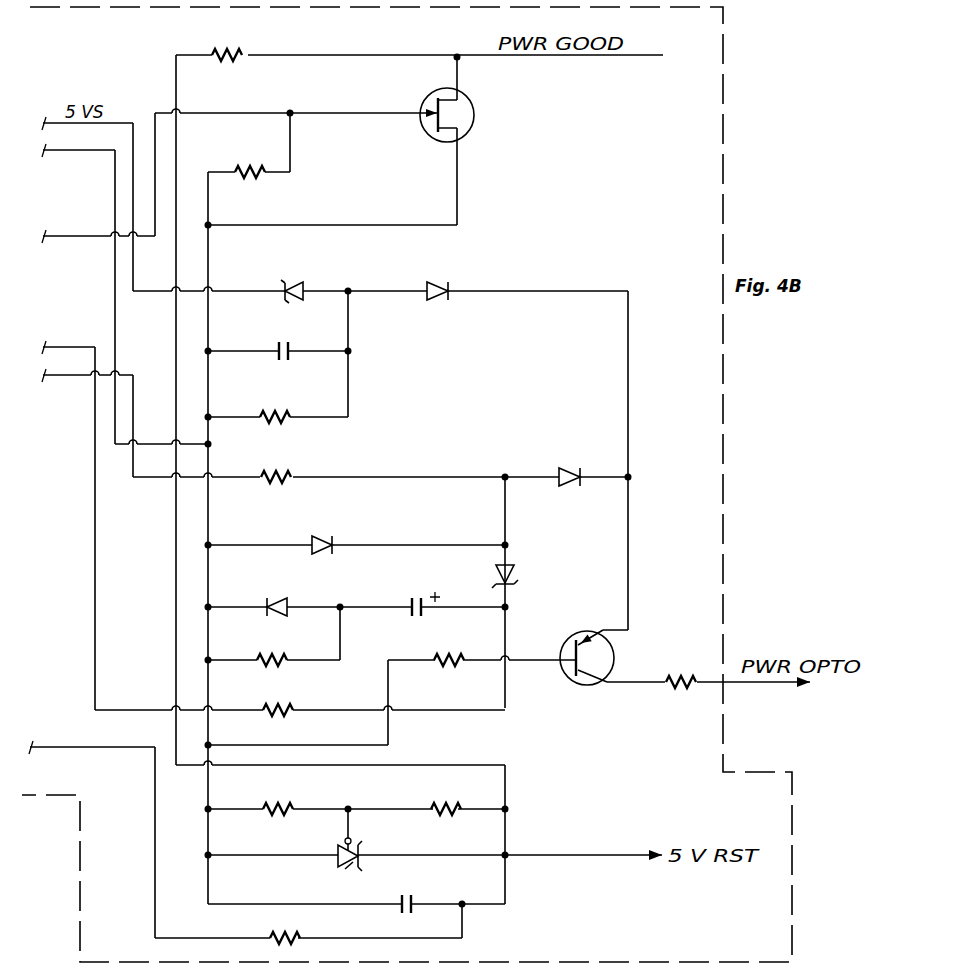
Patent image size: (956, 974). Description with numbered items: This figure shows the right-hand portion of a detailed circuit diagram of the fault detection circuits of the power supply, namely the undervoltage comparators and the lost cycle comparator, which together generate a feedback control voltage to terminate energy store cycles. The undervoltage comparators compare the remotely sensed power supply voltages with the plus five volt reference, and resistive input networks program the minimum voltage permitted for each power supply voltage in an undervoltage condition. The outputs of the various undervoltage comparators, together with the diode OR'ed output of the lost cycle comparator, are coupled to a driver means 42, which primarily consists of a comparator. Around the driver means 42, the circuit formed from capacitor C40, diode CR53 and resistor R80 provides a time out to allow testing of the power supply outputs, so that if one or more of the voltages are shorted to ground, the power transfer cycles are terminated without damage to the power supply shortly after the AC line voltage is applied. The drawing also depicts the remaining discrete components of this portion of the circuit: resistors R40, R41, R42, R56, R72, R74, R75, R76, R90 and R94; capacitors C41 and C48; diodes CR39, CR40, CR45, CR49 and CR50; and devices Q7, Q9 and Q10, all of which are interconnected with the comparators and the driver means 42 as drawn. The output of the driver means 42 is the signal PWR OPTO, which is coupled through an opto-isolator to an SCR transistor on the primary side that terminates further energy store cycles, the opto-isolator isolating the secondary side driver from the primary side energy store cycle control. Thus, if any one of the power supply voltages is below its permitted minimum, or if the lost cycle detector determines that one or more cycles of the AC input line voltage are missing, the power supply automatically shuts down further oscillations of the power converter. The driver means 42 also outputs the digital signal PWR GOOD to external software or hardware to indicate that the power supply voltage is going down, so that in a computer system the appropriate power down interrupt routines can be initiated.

The driver means 42 is at (724, 167).
The resistor 2.2K R56 is at (235, 36).
The resistor 10K R76 is at (244, 150).
The transistor Q10 is at (461, 117).
The zener diode CR45 is at (306, 279).
The diode CR49 is at (469, 282).
The capacitor .22 C41 is at (285, 338).
The resistor 68 R94 is at (267, 404).
The resistor 1.6K R74 is at (279, 463).
The diode CR50 is at (578, 463).
The diode CR39 is at (338, 532).
The diode CR53 is at (278, 594).
The capacitor C40 is at (425, 591).
The zener diode CR40 is at (536, 576).
The resistor R80 is at (270, 658).
The resistor 68 R72 is at (451, 659).
The resistor 1.6K R75 is at (299, 712).
The transistor Q9 is at (604, 664).
The resistor 68 R90 is at (676, 704).
The resistor 2.32K 1% R40 is at (280, 816).
The resistor 2.32K 1% R41 is at (448, 804).
The programmable unijunction transistor Q7 is at (353, 850).
The capacitor 15 MFD 25V C48 is at (441, 898).
The resistor 1K 1/2W R42 is at (290, 925).